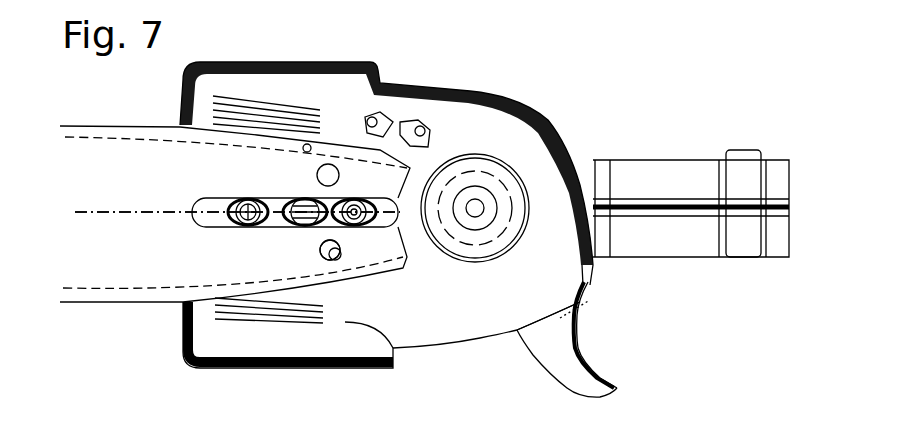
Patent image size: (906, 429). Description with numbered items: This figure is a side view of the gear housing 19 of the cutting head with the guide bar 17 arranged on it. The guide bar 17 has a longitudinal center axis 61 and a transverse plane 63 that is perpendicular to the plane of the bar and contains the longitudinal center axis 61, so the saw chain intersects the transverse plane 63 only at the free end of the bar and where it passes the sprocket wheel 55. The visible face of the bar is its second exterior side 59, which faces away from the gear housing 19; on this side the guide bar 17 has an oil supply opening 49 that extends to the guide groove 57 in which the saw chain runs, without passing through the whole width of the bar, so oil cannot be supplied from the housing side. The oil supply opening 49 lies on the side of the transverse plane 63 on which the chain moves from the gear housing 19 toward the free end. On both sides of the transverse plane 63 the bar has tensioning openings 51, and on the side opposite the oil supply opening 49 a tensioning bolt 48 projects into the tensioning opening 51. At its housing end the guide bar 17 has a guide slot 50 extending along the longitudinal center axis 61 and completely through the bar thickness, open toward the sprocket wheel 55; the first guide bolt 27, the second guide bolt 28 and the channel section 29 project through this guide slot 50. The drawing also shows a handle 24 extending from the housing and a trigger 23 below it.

The guide bar 17 is at (90, 147).
The guide groove 57 is at (138, 135).
The longitudinal center axis 61 is at (88, 212).
The transverse plane 63 is at (88, 212).
The second guide bolt 28 is at (248, 210).
The tensioning opening 51 is at (327, 164).
The first guide bolt 27 is at (354, 205).
The channel section 29 is at (356, 205).
The oil supply opening 49 is at (308, 144).
The tensioning bolt 48 is at (333, 258).
The gear housing 19 is at (477, 113).
The sprocket wheel 55 is at (503, 180).
The handle 24 is at (646, 177).
The second exterior side 59 is at (105, 276).
The guide slot 50 is at (222, 227).
The trigger 23 is at (547, 347).